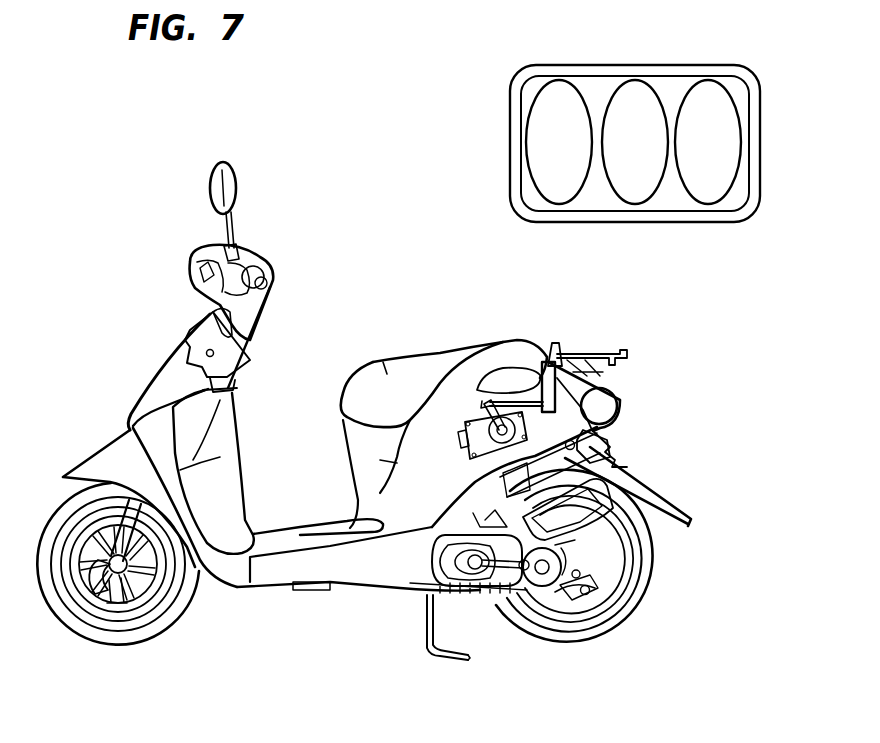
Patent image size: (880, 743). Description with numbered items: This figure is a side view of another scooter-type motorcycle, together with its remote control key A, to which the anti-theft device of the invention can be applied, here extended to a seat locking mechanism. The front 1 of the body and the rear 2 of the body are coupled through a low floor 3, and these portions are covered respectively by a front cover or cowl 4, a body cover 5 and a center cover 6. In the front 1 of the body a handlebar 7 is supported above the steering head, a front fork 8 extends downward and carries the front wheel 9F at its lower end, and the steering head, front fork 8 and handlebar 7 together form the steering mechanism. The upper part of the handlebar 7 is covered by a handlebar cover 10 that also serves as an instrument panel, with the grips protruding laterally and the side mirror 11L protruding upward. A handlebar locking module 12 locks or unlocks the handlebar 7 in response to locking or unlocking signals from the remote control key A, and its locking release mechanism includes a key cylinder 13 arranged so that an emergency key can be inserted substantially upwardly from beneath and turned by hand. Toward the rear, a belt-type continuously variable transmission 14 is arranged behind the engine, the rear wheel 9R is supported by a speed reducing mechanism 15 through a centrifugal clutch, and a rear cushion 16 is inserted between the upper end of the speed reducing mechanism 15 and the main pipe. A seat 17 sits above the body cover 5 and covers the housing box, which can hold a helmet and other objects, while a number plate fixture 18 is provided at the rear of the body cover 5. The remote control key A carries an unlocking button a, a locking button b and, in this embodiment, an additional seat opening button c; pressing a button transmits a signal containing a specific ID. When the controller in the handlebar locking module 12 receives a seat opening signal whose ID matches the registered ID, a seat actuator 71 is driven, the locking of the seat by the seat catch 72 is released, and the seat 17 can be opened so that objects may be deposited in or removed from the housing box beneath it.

The front of the body 1 is at (148, 375).
The rear of the body 2 is at (629, 400).
The floor 3 is at (258, 526).
The front cover or cowl 4 is at (237, 440).
The body cover 5 is at (362, 438).
The center cover 6 is at (295, 543).
The handlebar 7 is at (258, 262).
The front fork 8 is at (90, 507).
The front wheel 9F is at (187, 597).
The rear wheel 9R is at (617, 620).
The handlebar cover 10 is at (271, 267).
The side mirror 11L is at (236, 188).
The handlebar locking module 12 is at (252, 370).
The key cylinder 13 is at (232, 386).
The belt-type continuously variable transmission 14 is at (463, 597).
The speed reducing mechanism 15 is at (577, 563).
The rear cushion 16 is at (607, 441).
The seat 17 is at (413, 357).
The number plate fixture 18 is at (632, 467).
The seat actuator 71 is at (528, 343).
The seat catch 72 is at (597, 353).
The remote control key A is at (662, 115).
The unlocking button a is at (636, 80).
The locking button b is at (710, 80).
The seat opening button c is at (560, 80).